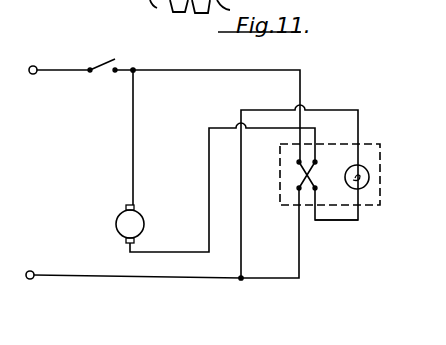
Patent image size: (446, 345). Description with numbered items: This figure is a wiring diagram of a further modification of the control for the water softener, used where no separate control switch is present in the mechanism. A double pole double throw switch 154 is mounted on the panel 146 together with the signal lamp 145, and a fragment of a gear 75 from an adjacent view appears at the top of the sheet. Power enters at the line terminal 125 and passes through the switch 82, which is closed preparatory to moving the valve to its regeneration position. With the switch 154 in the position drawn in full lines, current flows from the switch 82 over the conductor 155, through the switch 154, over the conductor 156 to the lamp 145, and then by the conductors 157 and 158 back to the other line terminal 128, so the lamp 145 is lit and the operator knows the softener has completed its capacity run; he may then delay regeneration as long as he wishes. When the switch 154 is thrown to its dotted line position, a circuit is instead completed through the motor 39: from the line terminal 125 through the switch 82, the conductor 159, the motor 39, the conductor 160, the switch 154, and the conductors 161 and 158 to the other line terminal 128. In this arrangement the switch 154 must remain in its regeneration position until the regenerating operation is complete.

The gear 75 is at (170, 10).
The switch 82 is at (102, 63).
The line terminal 125 is at (32, 75).
The other line terminal 128 is at (32, 279).
The conductor 155 is at (183, 72).
The conductor 157 is at (323, 110).
The conductor 159 is at (133, 148).
The conductor 160 is at (209, 182).
The conductor 161 is at (299, 267).
The motor 39 is at (116, 223).
The double pole double throw switch 154 is at (295, 173).
The signal lamp 145 is at (369, 177).
The panel 146 is at (367, 207).
The conductor 156 is at (332, 221).
The conductor 158 is at (142, 277).